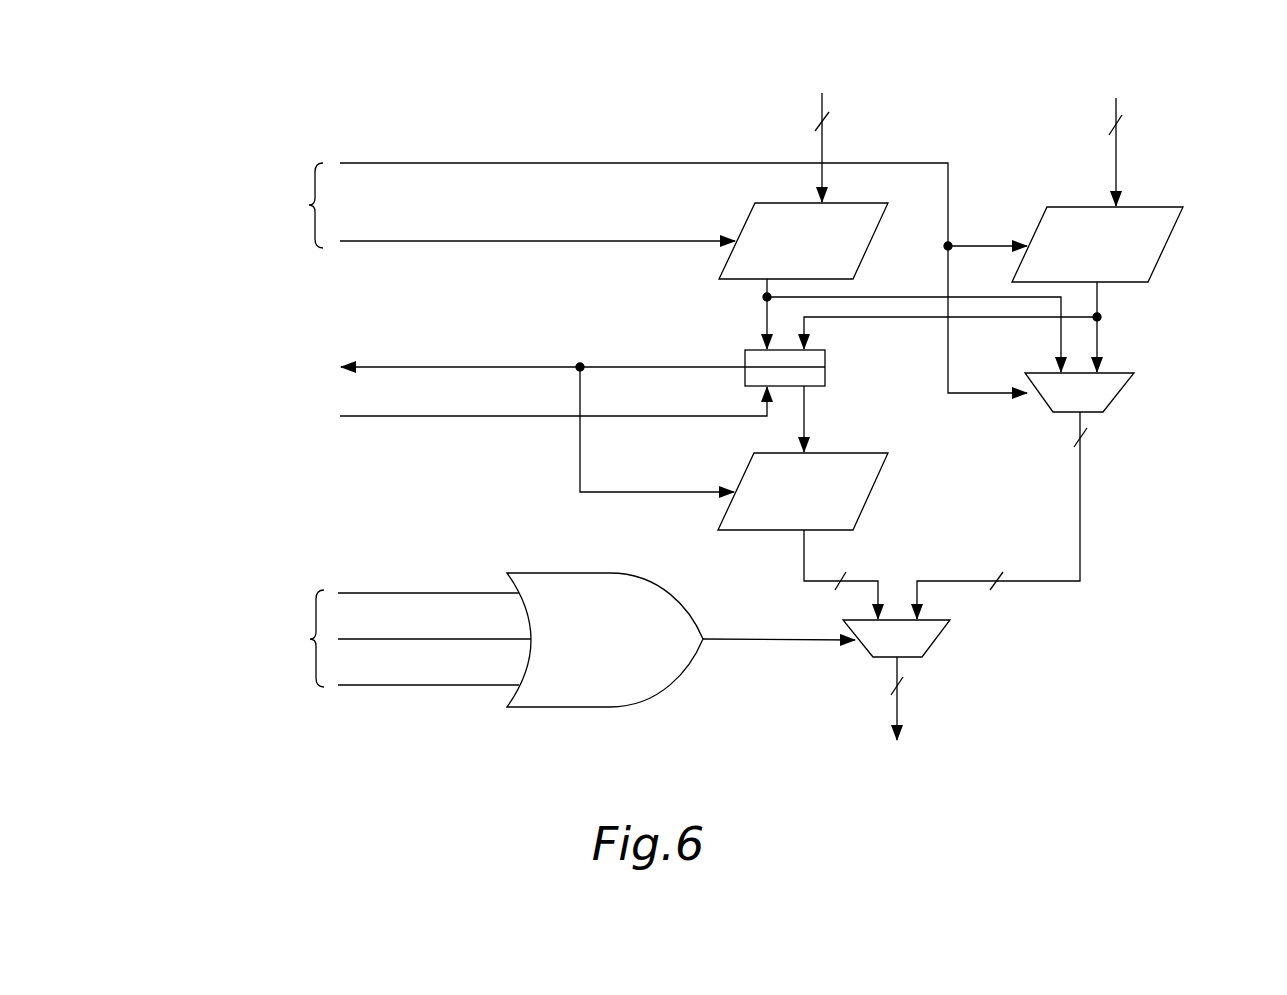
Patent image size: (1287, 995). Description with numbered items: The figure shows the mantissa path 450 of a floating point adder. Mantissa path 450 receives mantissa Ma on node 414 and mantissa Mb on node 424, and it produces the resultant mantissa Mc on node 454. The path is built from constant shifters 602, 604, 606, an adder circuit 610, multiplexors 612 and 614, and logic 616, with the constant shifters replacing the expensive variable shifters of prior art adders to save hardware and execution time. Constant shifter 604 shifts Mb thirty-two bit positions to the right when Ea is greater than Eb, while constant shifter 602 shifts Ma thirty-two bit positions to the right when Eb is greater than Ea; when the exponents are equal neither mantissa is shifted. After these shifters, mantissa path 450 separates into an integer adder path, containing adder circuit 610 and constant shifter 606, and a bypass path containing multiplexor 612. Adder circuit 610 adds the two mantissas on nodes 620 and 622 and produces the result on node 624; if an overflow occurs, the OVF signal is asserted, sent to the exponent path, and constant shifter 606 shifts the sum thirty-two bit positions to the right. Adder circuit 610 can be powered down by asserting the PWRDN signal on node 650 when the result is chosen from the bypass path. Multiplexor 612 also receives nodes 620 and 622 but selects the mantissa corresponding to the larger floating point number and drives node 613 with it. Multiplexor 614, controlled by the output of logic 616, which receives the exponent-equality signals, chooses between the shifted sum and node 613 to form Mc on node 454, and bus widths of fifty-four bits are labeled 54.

The mantissa path 450 is at (214, 58).
The 54-bit bus 54 is at (983, 398).
The node 414 is at (822, 143).
The node 424 is at (1116, 158).
The constant shifter 602 is at (738, 281).
The constant shifter 604 is at (1170, 245).
The constant shifter 606 is at (766, 534).
The adder circuit 610 is at (825, 363).
The multiplexor 612 is at (1110, 401).
The node 613 is at (1078, 491).
The multiplexor 614 is at (928, 650).
The logic 616 is at (558, 709).
The node 620 is at (766, 328).
The node 622 is at (1097, 302).
The node 624 is at (804, 412).
The node 650 is at (520, 418).
The node 454 is at (896, 705).